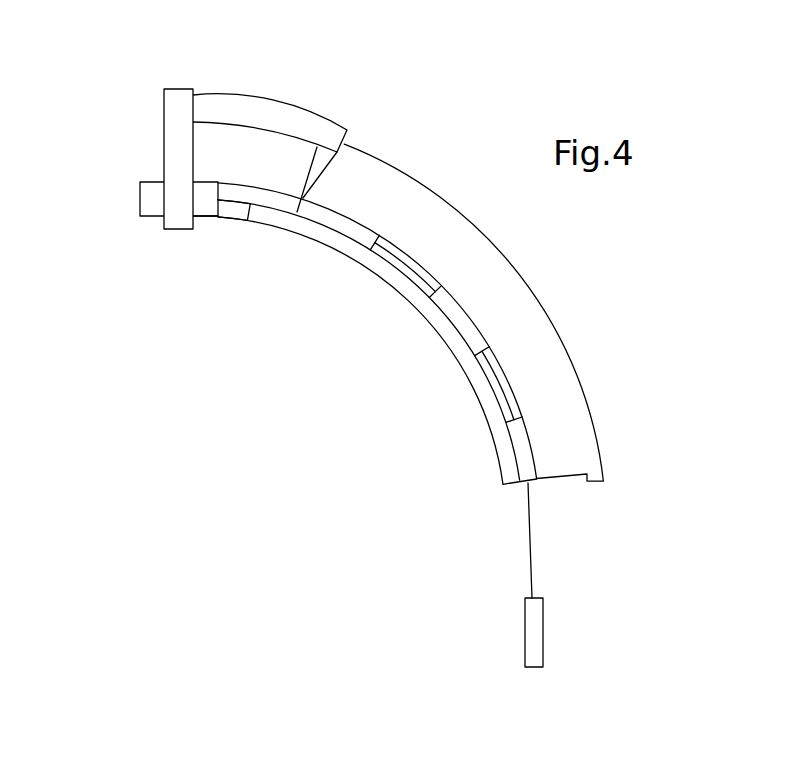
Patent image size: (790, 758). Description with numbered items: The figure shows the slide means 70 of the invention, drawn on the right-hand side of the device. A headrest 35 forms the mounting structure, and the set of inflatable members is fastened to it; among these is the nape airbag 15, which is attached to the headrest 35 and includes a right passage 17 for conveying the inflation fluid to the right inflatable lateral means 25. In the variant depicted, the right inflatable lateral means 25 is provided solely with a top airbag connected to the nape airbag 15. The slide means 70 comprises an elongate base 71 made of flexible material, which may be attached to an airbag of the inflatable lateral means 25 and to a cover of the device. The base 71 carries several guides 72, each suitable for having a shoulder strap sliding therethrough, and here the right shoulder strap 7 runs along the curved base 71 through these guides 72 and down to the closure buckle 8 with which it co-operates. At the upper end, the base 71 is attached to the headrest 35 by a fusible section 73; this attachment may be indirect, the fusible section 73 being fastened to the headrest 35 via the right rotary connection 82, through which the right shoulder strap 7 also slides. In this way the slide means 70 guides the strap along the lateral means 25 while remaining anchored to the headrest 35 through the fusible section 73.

The right inflatable lateral means 25 is at (614, 434).
The guides 72 is at (472, 320).
The elongate base 71 is at (499, 463).
The fusible section 73 is at (231, 219).
The slide means 70 is at (382, 346).
The nape airbag 15 is at (305, 112).
The right passage 17 is at (364, 135).
The right rotary connection 82 is at (206, 217).
The headrest 35 is at (163, 111).
The right shoulder strap 7 is at (532, 551).
The closure buckle 8 is at (543, 648).